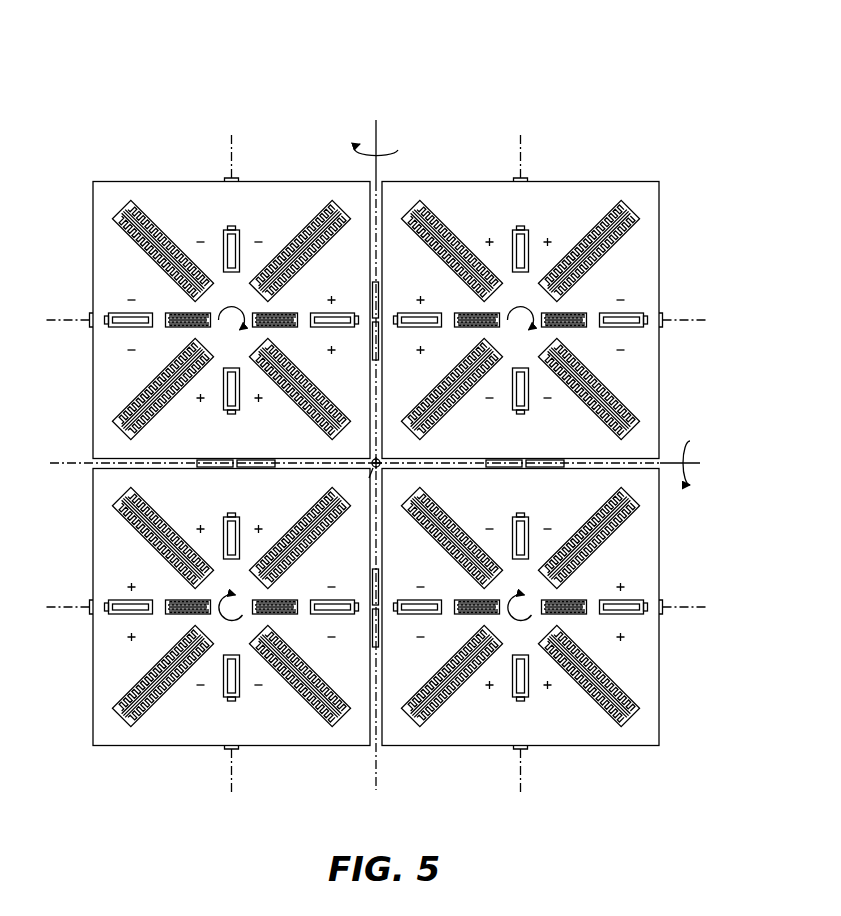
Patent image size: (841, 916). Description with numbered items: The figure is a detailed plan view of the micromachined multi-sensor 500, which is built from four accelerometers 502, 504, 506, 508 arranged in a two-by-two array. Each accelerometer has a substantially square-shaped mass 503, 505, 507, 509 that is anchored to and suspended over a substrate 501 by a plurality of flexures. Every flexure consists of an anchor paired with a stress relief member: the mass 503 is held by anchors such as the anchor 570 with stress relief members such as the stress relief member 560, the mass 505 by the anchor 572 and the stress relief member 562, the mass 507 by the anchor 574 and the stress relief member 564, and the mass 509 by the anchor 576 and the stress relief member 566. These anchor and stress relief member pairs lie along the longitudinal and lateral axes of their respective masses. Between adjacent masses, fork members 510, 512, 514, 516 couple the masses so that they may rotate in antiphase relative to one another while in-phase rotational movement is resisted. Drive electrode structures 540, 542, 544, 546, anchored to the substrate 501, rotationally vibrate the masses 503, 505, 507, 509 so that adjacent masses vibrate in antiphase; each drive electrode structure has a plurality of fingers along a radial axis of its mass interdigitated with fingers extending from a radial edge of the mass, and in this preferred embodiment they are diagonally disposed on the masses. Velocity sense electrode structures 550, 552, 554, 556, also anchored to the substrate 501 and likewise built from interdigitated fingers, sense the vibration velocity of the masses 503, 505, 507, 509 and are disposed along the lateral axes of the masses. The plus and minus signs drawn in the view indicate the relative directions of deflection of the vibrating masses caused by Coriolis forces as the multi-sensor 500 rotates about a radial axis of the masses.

The micromachined multi-sensor 500 is at (171, 89).
The substrate 501 is at (680, 793).
The accelerometer 502 is at (208, 299).
The mass 503 is at (273, 157).
The accelerometer 504 is at (545, 299).
The mass 505 is at (562, 157).
The accelerometer 506 is at (208, 632).
The mass 507 is at (275, 770).
The accelerometer 508 is at (545, 632).
The mass 509 is at (562, 770).
The fork member 510 is at (373, 290).
The fork member 512 is at (234, 460).
The fork member 514 is at (373, 577).
The fork member 516 is at (522, 460).
The drive electrode structure 540 is at (227, 317).
The drive electrode structure 542 is at (515, 315).
The drive electrode structure 544 is at (227, 601).
The drive electrode structure 546 is at (515, 601).
The velocity sense electrode structure 550 is at (199, 341).
The velocity sense electrode structure 552 is at (488, 341).
The velocity sense electrode structure 554 is at (199, 628).
The velocity sense electrode structure 556 is at (488, 628).
The stress relief member 560 is at (259, 308).
The stress relief member 562 is at (548, 308).
The stress relief member 564 is at (259, 595).
The stress relief member 566 is at (548, 595).
The anchor 570 is at (208, 213).
The anchor 572 is at (496, 213).
The anchor 574 is at (208, 499).
The anchor 576 is at (496, 499).